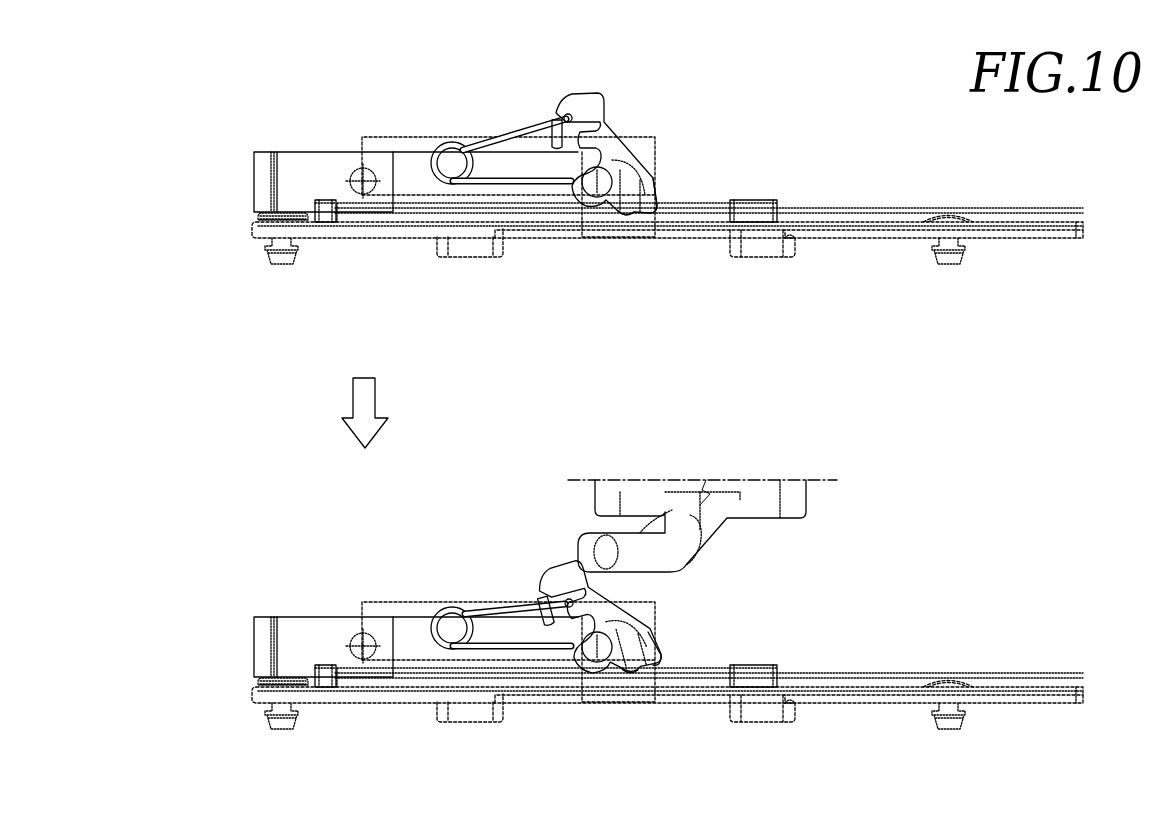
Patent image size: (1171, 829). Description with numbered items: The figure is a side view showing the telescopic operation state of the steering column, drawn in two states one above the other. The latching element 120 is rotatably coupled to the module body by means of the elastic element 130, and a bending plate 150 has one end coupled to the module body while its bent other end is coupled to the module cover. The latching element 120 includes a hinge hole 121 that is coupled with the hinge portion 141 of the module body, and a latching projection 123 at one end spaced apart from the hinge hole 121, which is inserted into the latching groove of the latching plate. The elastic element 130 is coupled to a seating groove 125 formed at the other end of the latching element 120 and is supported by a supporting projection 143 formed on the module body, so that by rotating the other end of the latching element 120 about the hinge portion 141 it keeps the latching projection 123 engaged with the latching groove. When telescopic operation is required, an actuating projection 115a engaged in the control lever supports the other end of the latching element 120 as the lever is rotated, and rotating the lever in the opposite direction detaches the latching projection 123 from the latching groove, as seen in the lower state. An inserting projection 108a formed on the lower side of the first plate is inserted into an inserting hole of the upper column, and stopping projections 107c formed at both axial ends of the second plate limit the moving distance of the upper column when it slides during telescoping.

The bending plate 150 is at (290, 187).
The stopping projection 107c is at (325, 200).
The inserting projection 108a is at (760, 245).
The supporting projection 143 is at (452, 160).
The elastic element 130 is at (515, 128).
The latching element 120 is at (605, 140).
The seating groove 125 is at (580, 110).
The hinge portion 141 is at (593, 192).
The hinge hole 121 is at (629, 215).
The latching projection 123 is at (655, 213).
The actuating projection 115a is at (635, 555).